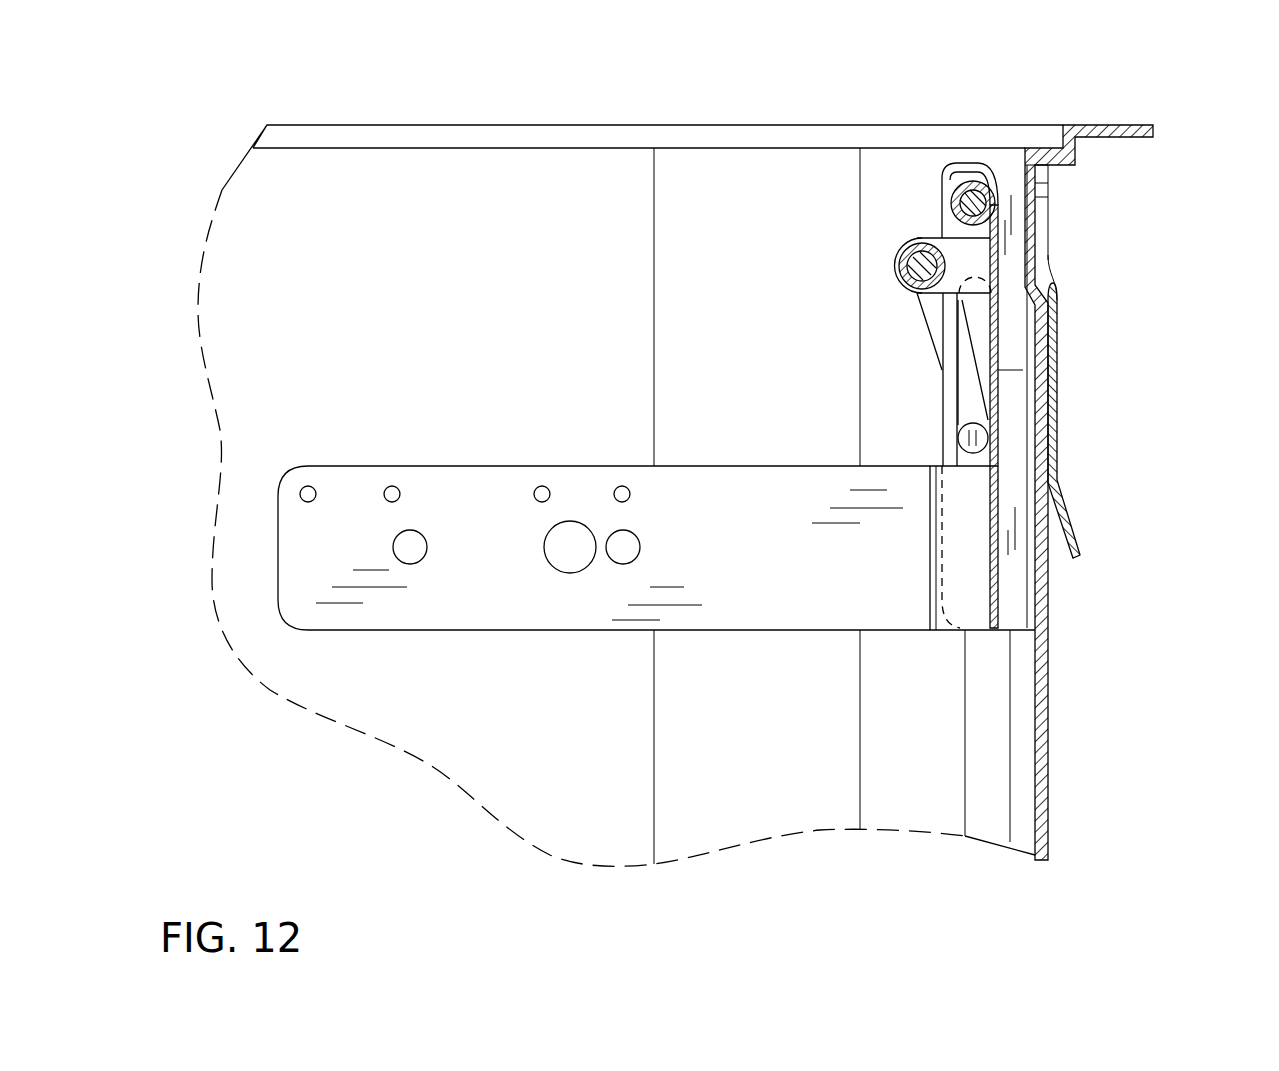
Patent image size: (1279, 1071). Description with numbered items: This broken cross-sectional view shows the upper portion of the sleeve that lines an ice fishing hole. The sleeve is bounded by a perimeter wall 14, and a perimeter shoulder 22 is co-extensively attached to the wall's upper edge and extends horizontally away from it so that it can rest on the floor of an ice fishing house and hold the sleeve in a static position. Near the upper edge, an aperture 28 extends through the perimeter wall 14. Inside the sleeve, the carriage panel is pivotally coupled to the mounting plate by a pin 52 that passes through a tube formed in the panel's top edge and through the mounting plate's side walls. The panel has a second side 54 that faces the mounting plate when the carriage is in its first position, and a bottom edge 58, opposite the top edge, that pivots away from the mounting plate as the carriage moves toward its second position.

The perimeter wall 14 is at (1052, 765).
The perimeter shoulder 22 is at (1153, 133).
The aperture 28 is at (1068, 222).
The pin 52 is at (973, 203).
The second side 54 is at (1053, 385).
The bottom edge 58 is at (992, 628).